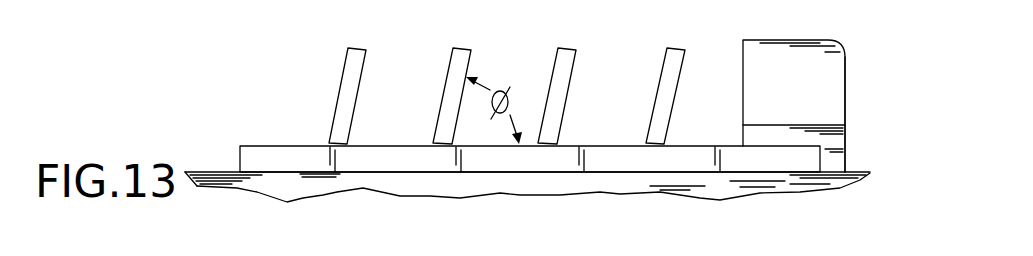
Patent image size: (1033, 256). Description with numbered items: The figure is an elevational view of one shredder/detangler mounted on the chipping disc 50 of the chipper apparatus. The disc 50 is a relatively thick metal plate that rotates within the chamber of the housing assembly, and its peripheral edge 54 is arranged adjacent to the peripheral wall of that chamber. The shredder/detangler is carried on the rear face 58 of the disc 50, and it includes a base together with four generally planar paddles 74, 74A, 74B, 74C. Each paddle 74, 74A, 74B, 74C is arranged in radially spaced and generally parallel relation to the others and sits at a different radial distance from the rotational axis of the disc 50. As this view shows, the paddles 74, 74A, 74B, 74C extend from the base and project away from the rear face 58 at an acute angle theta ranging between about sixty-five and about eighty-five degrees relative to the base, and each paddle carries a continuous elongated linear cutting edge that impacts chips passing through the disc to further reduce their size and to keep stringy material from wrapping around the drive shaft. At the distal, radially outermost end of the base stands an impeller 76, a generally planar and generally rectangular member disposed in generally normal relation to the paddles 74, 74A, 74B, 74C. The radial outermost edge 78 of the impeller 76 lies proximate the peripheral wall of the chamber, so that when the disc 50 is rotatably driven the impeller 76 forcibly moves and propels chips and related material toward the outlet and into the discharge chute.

The chipping disc 50 is at (276, 213).
The peripheral edge 54 is at (887, 181).
The rear face 58 is at (212, 170).
The paddle 74 is at (671, 60).
The paddle 74A is at (560, 60).
The paddle 74B is at (456, 60).
The paddle 74C is at (353, 60).
The impeller 76 is at (800, 52).
The radial outermost edge 78 is at (846, 92).